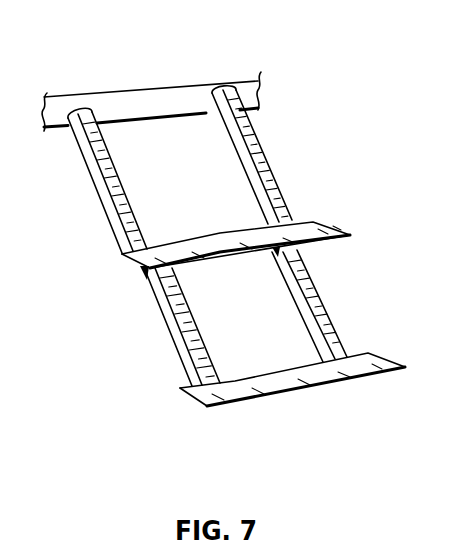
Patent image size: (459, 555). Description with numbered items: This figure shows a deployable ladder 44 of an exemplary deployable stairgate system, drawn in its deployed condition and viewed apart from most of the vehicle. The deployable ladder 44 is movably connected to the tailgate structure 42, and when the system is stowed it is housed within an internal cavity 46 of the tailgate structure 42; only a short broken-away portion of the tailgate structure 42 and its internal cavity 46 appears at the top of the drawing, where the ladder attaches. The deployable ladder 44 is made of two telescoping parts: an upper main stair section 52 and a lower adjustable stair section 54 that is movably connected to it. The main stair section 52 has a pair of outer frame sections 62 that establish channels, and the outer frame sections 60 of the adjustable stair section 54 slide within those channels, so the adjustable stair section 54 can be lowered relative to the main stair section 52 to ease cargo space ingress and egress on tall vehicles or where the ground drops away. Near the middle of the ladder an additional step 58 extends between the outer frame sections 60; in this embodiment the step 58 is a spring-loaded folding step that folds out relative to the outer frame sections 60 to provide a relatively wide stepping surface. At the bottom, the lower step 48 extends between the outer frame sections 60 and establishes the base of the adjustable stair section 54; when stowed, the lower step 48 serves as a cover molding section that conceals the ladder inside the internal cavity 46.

The tailgate structure 42 is at (72, 84).
The deployable ladder 44 is at (104, 261).
The internal cavity 46 is at (143, 97).
The lower step 48 is at (283, 378).
The main stair section 52 is at (272, 135).
The adjustable stair section 54 is at (333, 280).
The additional step 58 is at (315, 228).
The outer frame sections of the adjustable stair section 60 is at (330, 327).
The outer frame sections of the main stair section 62 is at (267, 175).